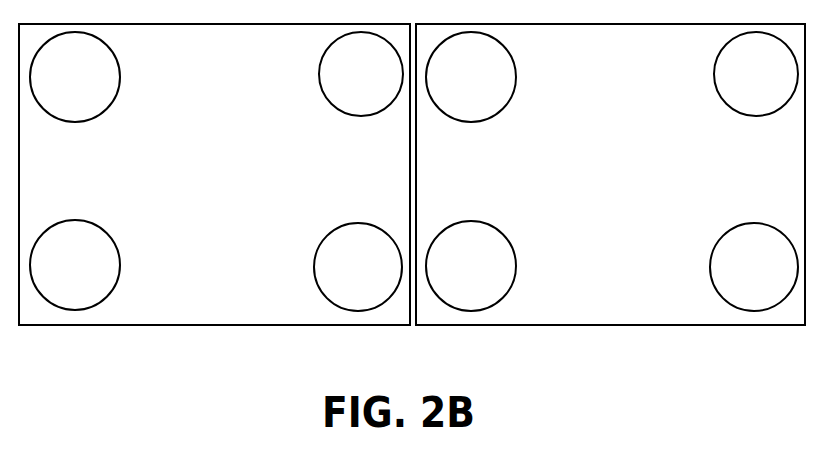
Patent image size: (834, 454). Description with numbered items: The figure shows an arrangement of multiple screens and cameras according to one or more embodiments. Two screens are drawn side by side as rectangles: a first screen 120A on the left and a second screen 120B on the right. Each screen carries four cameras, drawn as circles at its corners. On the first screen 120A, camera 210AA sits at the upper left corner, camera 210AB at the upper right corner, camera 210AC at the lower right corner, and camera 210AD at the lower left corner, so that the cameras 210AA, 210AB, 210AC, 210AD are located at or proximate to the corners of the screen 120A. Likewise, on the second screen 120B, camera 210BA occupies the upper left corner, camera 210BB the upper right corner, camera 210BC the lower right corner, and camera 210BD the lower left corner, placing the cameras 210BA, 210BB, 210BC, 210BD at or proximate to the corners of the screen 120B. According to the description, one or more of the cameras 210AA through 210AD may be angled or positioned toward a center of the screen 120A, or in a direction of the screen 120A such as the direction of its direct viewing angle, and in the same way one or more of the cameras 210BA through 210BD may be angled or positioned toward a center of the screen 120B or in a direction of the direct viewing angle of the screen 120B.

The screen 120A is at (237, 185).
The screen 120B is at (633, 185).
The camera 210AA is at (105, 88).
The camera 210AB is at (390, 84).
The camera 210AC is at (390, 276).
The camera 210AD is at (107, 275).
The camera 210BA is at (502, 86).
The camera 210BB is at (788, 83).
The camera 210BC is at (787, 275).
The camera 210BD is at (502, 275).